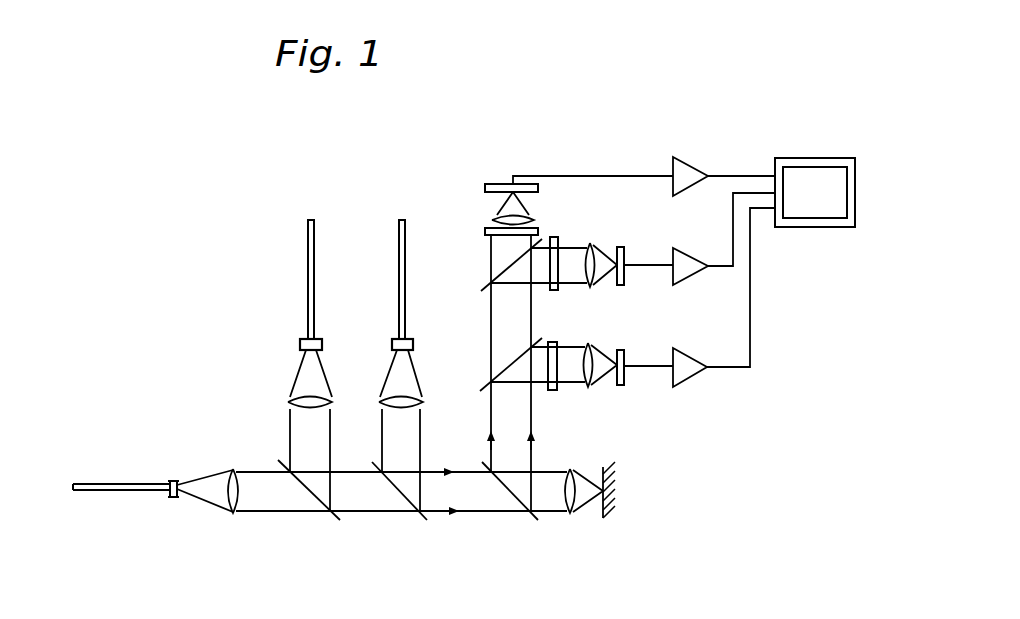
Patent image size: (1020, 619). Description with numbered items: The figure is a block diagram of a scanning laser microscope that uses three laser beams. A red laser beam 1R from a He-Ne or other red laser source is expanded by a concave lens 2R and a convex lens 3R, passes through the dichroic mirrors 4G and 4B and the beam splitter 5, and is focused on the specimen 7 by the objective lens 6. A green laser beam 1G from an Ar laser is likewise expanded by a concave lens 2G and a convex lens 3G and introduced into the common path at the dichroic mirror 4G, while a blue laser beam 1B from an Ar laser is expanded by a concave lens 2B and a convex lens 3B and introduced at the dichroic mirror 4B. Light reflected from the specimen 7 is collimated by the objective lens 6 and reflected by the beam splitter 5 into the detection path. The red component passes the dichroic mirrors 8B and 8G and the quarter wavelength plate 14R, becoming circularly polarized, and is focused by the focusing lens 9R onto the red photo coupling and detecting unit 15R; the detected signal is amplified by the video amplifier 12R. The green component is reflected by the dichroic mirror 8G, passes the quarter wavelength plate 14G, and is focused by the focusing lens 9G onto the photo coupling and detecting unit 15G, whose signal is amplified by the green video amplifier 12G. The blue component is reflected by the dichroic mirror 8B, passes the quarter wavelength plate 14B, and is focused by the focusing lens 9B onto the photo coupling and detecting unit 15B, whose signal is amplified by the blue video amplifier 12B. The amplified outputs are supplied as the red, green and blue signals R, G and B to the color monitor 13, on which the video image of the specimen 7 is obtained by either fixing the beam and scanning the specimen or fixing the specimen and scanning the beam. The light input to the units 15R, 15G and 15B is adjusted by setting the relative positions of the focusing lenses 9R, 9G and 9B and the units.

The red laser beam 1R is at (118, 493).
The concave lens 2R is at (170, 500).
The convex lens 3R is at (233, 515).
The dichroic mirror 4G is at (330, 521).
The dichroic mirror 4B is at (425, 522).
The beam splitter 5 is at (535, 522).
The objective lens 6 is at (570, 516).
The specimen 7 is at (612, 483).
The green laser beam 1G is at (306, 262).
The concave lens 2G is at (300, 343).
The convex lens 3G is at (288, 401).
The blue laser beam 1B is at (398, 261).
The concave lens 2B is at (392, 343).
The convex lens 3B is at (378, 401).
The dichroic mirror 8G is at (481, 291).
The dichroic mirror 8B is at (480, 391).
The 1/4 wavelength plate 14R is at (485, 232).
The 1/4 wavelength plate 14G is at (553, 291).
The 1/4 wavelength plate 14B is at (553, 391).
The focusing lens 9R is at (493, 214).
The focusing lens 9G is at (590, 288).
The focusing lens 9B is at (588, 388).
The photo coupling and detecting unit 15R is at (540, 190).
The photo coupling and detecting unit 15G is at (621, 286).
The photo coupling and detecting unit 15B is at (621, 386).
The video amplifier 12R is at (686, 157).
The green video amplifier 12G is at (686, 248).
The blue video amplifier 12B is at (688, 350).
The color monitor 13 is at (815, 228).
The green signal input G is at (768, 189).
The red signal input R is at (770, 176).
The blue signal input B is at (768, 208).